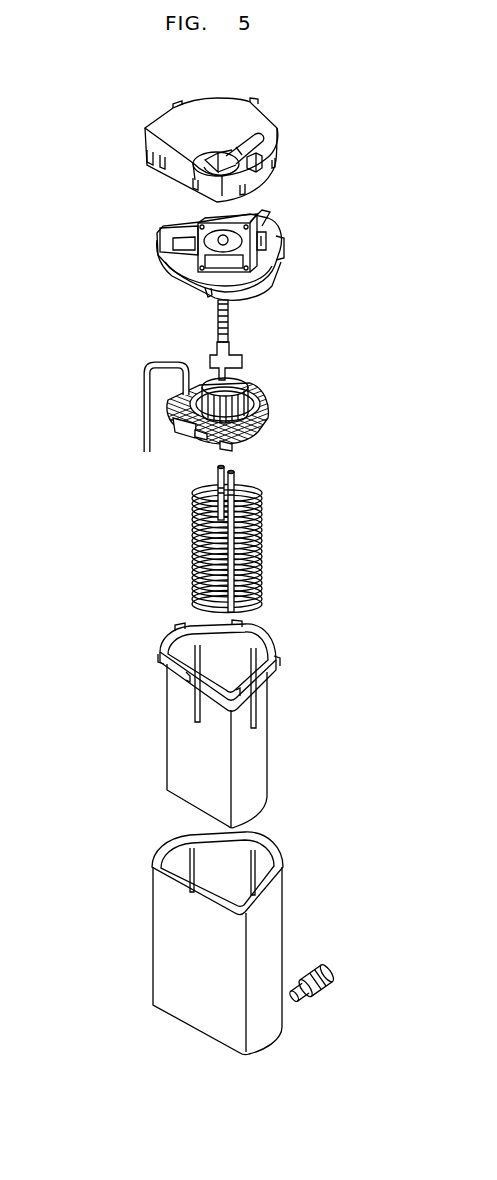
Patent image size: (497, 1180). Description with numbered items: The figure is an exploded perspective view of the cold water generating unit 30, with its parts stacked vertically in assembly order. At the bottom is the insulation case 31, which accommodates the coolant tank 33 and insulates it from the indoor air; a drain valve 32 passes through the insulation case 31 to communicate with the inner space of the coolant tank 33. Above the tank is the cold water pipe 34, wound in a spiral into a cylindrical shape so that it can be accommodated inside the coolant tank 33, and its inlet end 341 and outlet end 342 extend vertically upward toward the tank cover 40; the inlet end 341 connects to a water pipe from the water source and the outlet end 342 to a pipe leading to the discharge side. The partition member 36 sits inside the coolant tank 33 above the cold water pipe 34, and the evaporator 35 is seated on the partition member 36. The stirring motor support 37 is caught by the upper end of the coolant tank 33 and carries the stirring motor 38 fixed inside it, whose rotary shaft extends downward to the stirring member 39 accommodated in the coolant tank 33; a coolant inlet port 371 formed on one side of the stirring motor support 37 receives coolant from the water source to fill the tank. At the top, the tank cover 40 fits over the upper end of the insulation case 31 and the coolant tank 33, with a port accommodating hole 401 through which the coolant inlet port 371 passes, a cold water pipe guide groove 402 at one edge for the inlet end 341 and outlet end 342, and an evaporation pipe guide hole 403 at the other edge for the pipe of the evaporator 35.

The cold water generating unit 30 is at (88, 286).
The insulation case 31 is at (275, 926).
The drain valve 32 is at (338, 978).
The coolant tank 33 is at (268, 735).
The cold water pipe 34 is at (263, 556).
The inlet end 341 is at (236, 470).
The outlet end 342 is at (216, 470).
The evaporator 35 is at (263, 399).
The partition member 36 is at (250, 384).
The stirring motor support 37 is at (284, 228).
The coolant inlet port 371 is at (285, 249).
The stirring motor 38 is at (203, 222).
The stirring member 39 is at (240, 335).
The tank cover 40 is at (271, 128).
The port accommodating hole 401 is at (251, 135).
The cold water pipe guide groove 402 is at (220, 150).
The evaporation pipe guide hole 403 is at (148, 158).